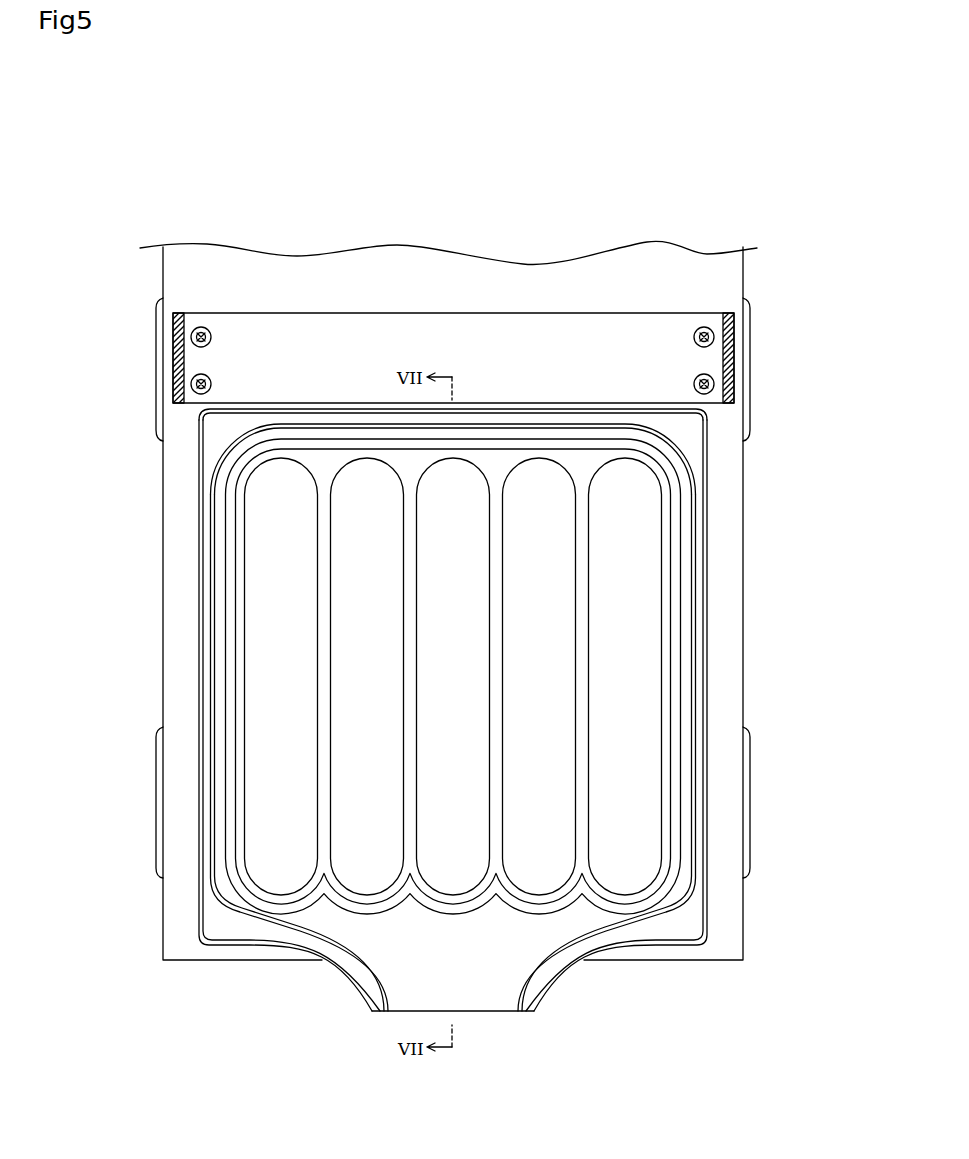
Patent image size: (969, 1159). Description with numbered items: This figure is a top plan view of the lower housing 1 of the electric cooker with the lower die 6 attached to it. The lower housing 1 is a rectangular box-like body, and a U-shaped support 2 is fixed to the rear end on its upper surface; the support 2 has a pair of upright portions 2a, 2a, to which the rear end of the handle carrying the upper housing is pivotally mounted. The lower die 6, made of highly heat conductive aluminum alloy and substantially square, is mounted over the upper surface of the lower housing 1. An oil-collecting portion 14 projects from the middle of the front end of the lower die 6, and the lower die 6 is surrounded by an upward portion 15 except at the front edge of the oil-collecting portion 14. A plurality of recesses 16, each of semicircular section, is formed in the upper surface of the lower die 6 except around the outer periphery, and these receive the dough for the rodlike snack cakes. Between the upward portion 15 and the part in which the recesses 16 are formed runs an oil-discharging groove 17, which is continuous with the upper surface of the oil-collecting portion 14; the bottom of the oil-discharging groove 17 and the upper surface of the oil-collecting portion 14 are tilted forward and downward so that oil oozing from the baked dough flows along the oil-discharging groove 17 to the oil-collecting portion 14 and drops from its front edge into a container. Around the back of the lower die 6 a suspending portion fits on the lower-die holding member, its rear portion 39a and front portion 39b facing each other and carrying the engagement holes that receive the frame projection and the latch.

The lower housing 1 is at (743, 577).
The support 2 is at (451, 282).
The upright portion 2a is at (174, 356).
The lower die 6 is at (394, 717).
The oil-collecting portion 14 is at (479, 980).
The upward portion 15 is at (196, 675).
The recess 16 is at (282, 567).
The oil-discharging groove 17 is at (220, 629).
The rear portion 39a is at (542, 409).
The front portion 39b is at (666, 946).